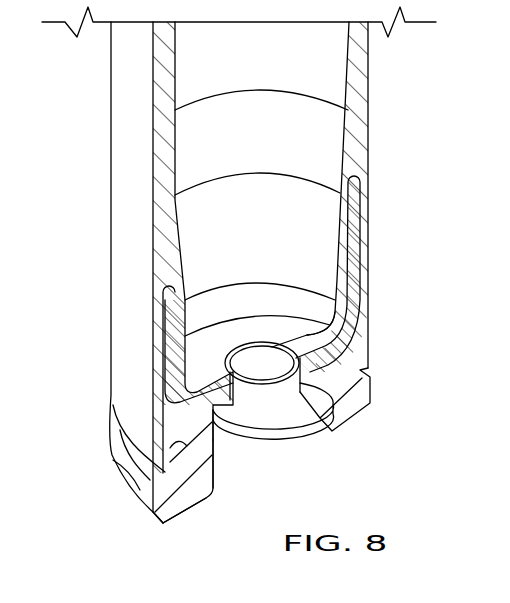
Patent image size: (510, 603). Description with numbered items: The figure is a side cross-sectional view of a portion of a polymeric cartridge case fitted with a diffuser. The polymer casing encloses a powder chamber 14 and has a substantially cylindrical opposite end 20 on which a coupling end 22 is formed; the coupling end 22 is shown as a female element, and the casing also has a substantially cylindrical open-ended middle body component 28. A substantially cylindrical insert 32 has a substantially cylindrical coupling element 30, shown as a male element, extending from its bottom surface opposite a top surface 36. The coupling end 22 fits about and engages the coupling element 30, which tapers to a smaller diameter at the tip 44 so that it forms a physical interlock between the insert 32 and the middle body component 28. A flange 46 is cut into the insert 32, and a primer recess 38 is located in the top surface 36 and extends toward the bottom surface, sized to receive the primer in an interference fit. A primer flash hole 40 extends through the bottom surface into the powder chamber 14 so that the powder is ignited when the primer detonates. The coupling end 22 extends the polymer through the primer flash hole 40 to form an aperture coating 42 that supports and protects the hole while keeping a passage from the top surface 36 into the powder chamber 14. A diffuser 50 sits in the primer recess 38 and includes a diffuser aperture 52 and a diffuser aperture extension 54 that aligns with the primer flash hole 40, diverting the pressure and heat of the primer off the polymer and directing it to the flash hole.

The powder chamber 14 is at (241, 67).
The substantially cylindrical opposite end 20 is at (195, 230).
The coupling end 22 is at (368, 248).
The middle body component 28 is at (111, 334).
The coupling element 30 is at (350, 313).
The substantially cylindrical insert 32 is at (146, 514).
The top surface 36 is at (190, 512).
The primer recess 38 is at (214, 470).
The primer flash hole 40 is at (237, 375).
The aperture coating 42 is at (266, 430).
The tip 44 is at (357, 178).
The flange 46 is at (138, 483).
The diffuser 50 is at (282, 432).
The diffuser aperture 52 is at (272, 358).
The diffuser aperture extension 54 is at (330, 413).